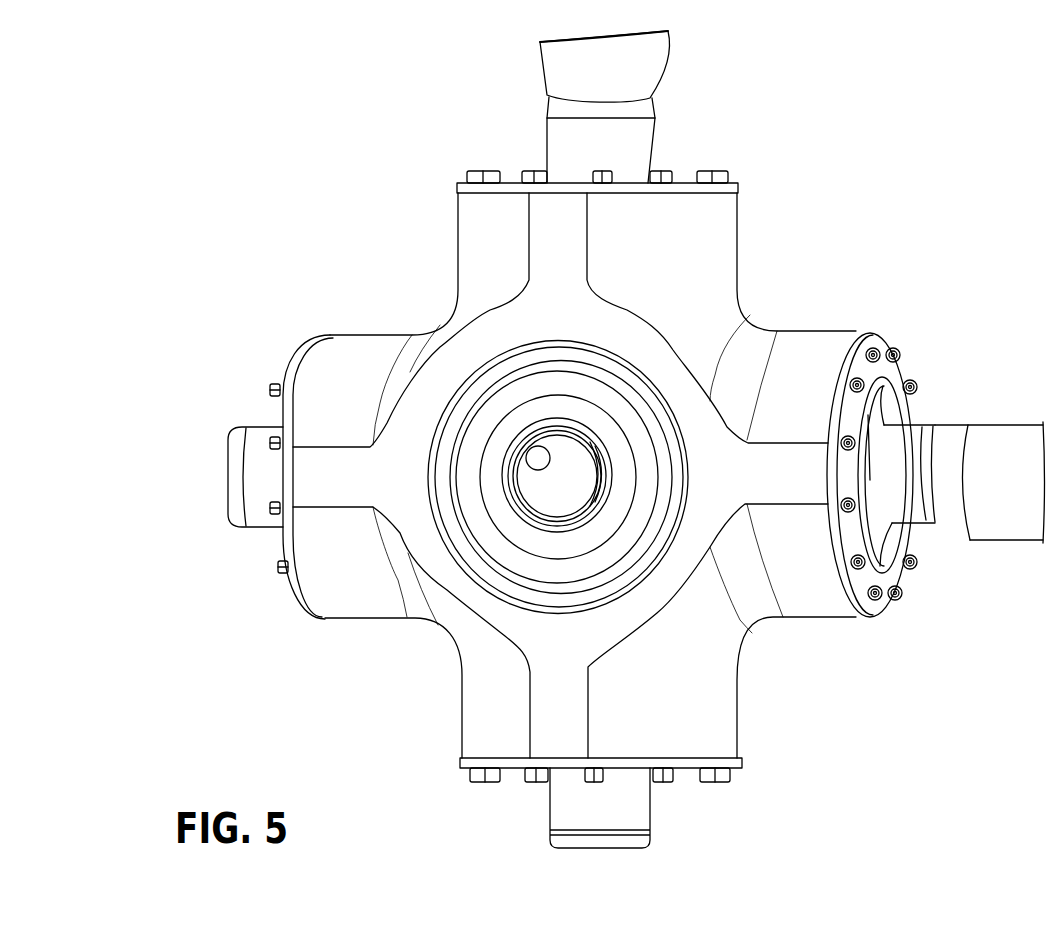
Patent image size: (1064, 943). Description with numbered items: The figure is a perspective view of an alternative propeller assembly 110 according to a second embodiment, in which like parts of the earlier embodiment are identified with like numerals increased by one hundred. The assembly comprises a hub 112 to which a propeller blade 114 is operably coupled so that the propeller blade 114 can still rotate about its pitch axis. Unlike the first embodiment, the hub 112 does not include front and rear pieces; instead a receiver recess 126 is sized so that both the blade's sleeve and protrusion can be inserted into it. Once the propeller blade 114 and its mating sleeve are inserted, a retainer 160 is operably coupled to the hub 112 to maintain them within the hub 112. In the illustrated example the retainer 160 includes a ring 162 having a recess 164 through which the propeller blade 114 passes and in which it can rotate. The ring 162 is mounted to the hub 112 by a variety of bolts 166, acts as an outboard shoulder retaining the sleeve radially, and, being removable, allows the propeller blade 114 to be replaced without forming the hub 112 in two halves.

The propeller assembly 110 is at (331, 223).
The hub 112 is at (746, 284).
The propeller blade 114 is at (678, 58).
The receiver recess 126 is at (905, 372).
The retainer 160 is at (889, 328).
The ring 162 is at (843, 367).
The recess 164 is at (906, 526).
The bolts 166 is at (911, 570).